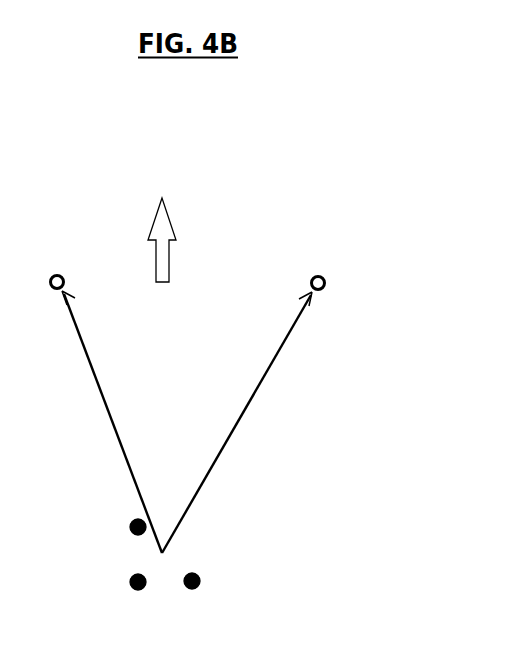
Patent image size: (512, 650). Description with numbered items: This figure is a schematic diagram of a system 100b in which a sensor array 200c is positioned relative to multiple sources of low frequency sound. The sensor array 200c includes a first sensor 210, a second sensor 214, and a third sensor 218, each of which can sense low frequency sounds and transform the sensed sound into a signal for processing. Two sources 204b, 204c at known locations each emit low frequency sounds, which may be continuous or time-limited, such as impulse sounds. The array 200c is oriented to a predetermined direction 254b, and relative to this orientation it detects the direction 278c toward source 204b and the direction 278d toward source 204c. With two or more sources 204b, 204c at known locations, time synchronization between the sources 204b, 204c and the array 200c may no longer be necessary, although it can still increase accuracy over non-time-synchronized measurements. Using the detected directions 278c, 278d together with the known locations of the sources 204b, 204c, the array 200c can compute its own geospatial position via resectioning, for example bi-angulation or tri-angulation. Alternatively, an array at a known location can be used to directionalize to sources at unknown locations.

The system 100b is at (335, 182).
The source 204b is at (59, 274).
The source 204c is at (326, 283).
The predetermined direction 254b is at (163, 267).
The direction 278c is at (100, 394).
The direction 278d is at (248, 405).
The sensor array 200c is at (227, 533).
The first sensor 210 is at (130, 520).
The third sensor 218 is at (130, 583).
The second sensor 214 is at (200, 581).